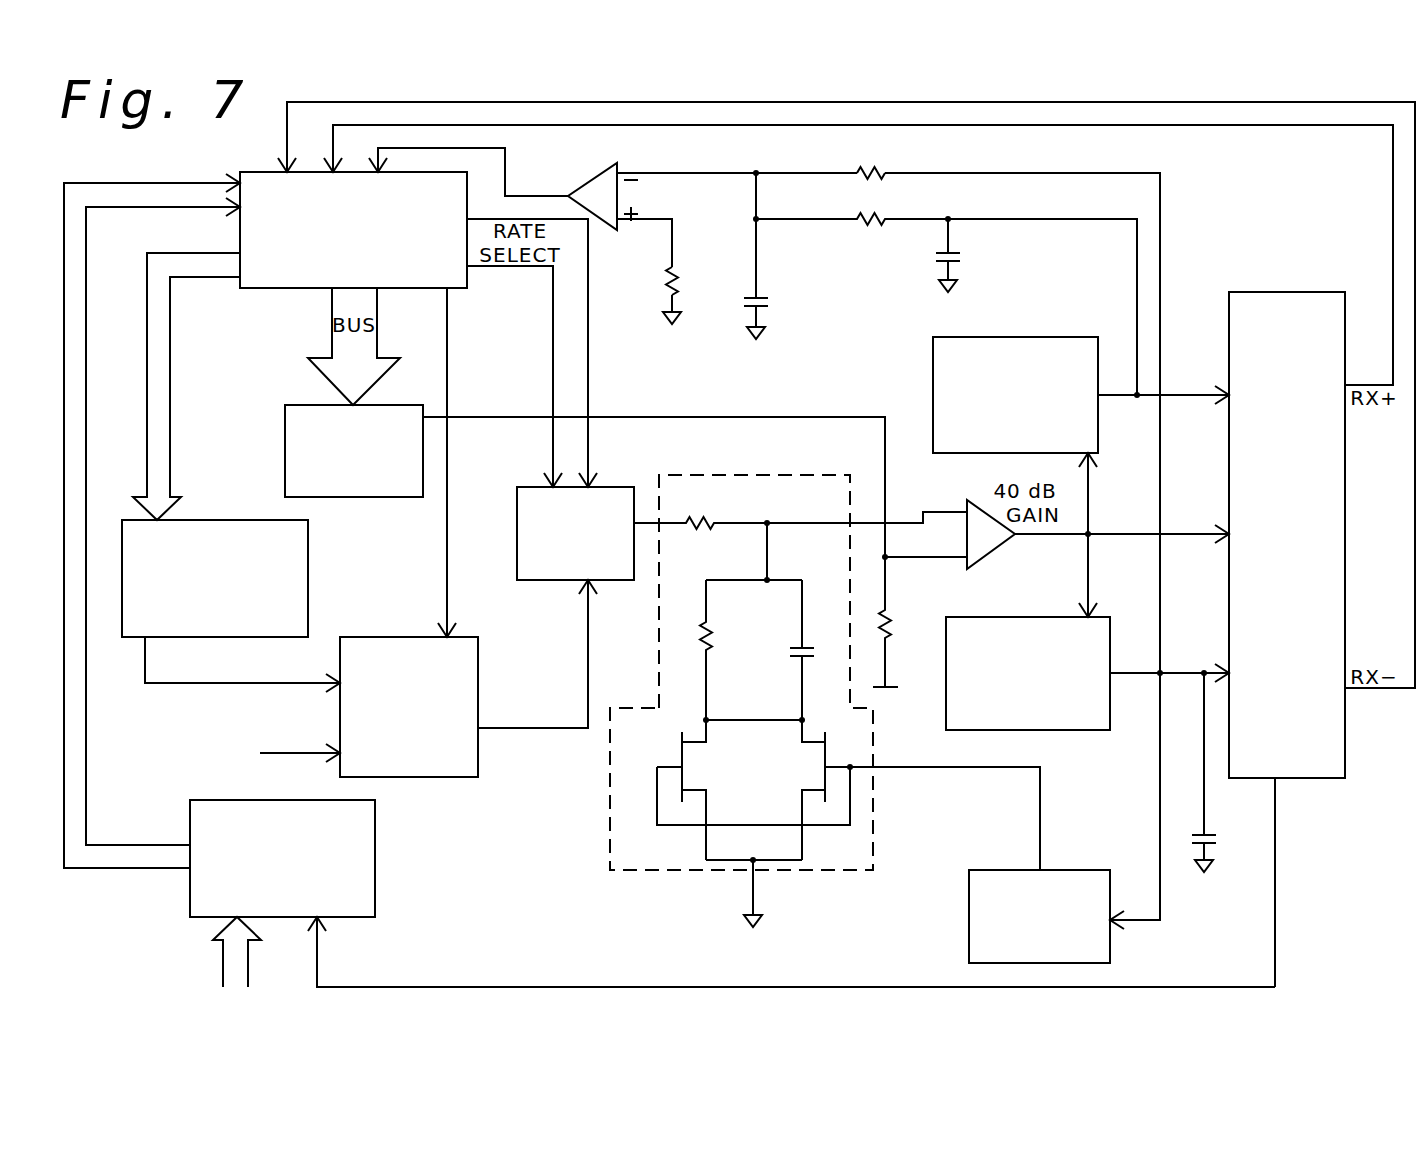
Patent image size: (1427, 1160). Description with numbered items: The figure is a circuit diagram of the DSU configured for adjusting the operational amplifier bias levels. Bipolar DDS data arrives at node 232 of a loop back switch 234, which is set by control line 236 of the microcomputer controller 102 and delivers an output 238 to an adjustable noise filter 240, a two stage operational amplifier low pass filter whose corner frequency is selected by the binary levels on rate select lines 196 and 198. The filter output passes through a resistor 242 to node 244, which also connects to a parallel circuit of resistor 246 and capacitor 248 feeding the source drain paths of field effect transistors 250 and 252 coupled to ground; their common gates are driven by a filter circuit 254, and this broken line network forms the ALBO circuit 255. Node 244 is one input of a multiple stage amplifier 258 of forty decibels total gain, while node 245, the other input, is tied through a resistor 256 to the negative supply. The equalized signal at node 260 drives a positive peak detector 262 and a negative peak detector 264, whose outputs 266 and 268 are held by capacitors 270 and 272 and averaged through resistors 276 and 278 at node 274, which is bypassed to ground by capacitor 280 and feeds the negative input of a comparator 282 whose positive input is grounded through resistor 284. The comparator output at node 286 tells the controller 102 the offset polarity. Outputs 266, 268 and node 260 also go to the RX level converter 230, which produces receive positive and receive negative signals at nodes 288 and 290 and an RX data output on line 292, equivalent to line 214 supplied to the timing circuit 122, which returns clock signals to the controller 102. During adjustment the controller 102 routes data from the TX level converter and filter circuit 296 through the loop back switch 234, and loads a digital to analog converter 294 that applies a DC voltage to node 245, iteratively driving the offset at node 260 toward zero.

The microcomputer controller 102 is at (467, 288).
The timing circuit 122 is at (375, 890).
The rate select line 196 is at (550, 383).
The rate select line 198 is at (590, 348).
The RX data line 214 is at (527, 987).
The RX level converter 230 is at (1255, 292).
The node 232 is at (310, 750).
The loop back switch 234 is at (408, 777).
The control line 236 is at (443, 512).
The output 238 is at (508, 735).
The adjustable noise filter 240 is at (540, 580).
The resistor 242 is at (690, 530).
The node 244 is at (770, 520).
The node 245 is at (888, 560).
The resistor 246 is at (715, 625).
The capacitor 248 is at (795, 655).
The field effect transistor 250 is at (683, 778).
The field effect transistor 252 is at (822, 757).
The filter circuit 254 is at (1052, 870).
The ALBO circuit 255 is at (723, 475).
The resistor 256 is at (893, 614).
The multiple stage amplifier 258 is at (1000, 547).
The node 260 is at (1091, 531).
The positive peak detector 262 is at (1040, 337).
The negative peak detector 264 is at (990, 615).
The output 266 is at (1140, 396).
The output 268 is at (1163, 668).
The capacitor 270 is at (955, 257).
The capacitor 272 is at (1200, 828).
The node 274 is at (737, 173).
The resistor 276 is at (880, 170).
The resistor 278 is at (862, 225).
The capacitor 280 is at (765, 300).
The comparator 282 is at (617, 163).
The resistor 284 is at (670, 283).
The node 286 is at (505, 177).
The node 288 is at (1393, 142).
The node 290 is at (1352, 690).
The line 292 is at (1275, 840).
The digital to analog converter 294 is at (285, 420).
The TX level converter and filter circuit 296 is at (308, 570).